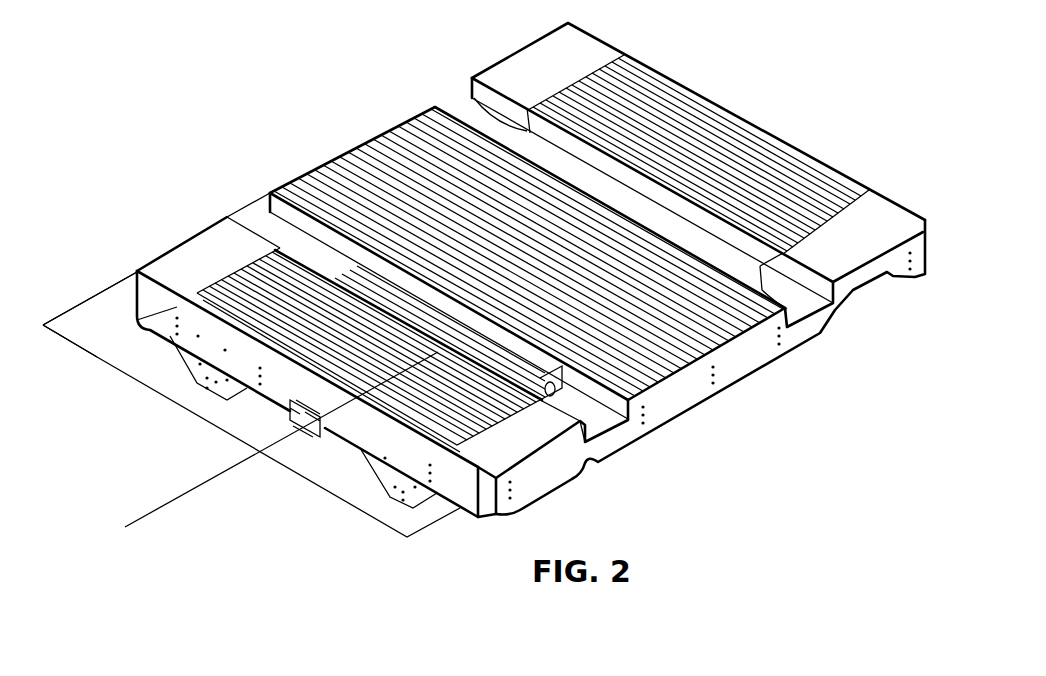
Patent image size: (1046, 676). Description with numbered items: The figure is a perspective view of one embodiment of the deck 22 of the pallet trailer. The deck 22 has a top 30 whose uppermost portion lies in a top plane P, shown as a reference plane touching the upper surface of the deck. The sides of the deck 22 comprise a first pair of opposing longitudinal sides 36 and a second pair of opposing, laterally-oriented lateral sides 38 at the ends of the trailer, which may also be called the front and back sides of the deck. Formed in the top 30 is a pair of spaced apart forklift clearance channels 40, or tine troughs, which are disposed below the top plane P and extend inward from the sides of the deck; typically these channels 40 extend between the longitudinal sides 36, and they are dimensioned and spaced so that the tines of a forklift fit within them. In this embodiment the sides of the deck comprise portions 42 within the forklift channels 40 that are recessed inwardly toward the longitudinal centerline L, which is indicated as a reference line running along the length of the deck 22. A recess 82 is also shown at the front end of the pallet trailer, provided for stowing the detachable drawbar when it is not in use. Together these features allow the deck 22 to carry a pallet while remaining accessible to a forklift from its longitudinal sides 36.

The deck 22 is at (272, 142).
The top 30 is at (860, 240).
The longitudinal sides 36 is at (380, 130).
The lateral sides 38 is at (845, 173).
The forklift clearance channels 40 is at (794, 300).
The recessed portions 42 is at (470, 100).
The recess 82 is at (307, 422).
The top plane P is at (110, 318).
The longitudinal centerline L is at (187, 480).